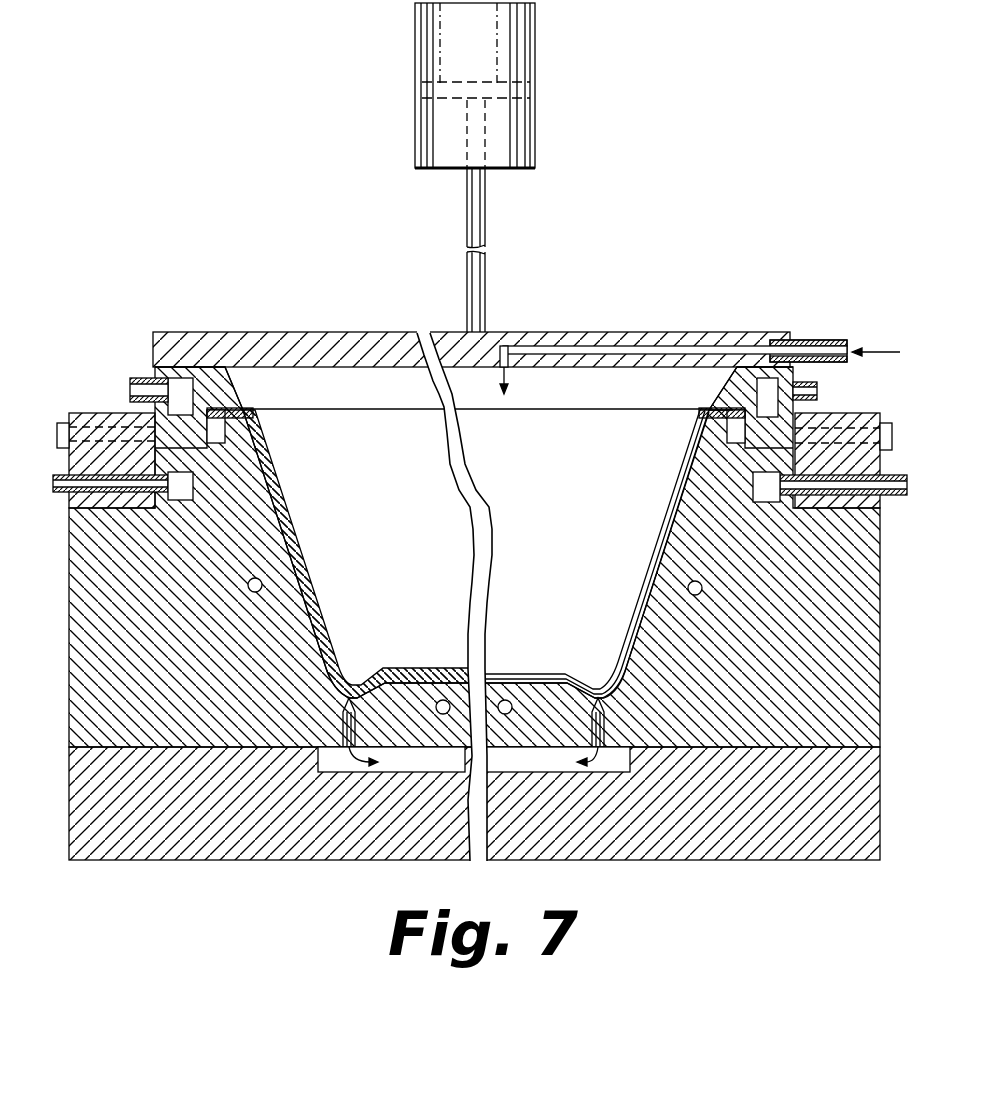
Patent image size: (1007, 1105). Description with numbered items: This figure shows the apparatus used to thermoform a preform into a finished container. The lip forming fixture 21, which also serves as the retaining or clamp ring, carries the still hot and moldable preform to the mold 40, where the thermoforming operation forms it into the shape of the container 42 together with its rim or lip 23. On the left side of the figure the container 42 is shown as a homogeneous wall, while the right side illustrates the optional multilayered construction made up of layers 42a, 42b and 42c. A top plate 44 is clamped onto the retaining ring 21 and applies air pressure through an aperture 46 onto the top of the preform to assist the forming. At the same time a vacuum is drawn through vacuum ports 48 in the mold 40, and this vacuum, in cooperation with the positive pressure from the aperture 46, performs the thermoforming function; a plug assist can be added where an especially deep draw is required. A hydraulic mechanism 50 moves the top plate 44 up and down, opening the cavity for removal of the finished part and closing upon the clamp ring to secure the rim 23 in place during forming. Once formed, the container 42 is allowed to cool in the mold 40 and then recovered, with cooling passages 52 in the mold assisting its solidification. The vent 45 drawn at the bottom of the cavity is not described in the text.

The lip forming fixture 21 is at (157, 370).
The rim 23 is at (257, 416).
The mold 40 is at (243, 533).
The container 42 is at (307, 607).
The layer 42a is at (692, 440).
The layer 42b is at (688, 457).
The layer 42c is at (673, 498).
The top plate 44 is at (660, 353).
The air vent 45 is at (349, 697).
The aperture 46 is at (552, 348).
The vacuum ports 48 is at (597, 697).
The hydraulic mechanism 50 is at (478, 218).
The cooling passages 52 is at (262, 583).